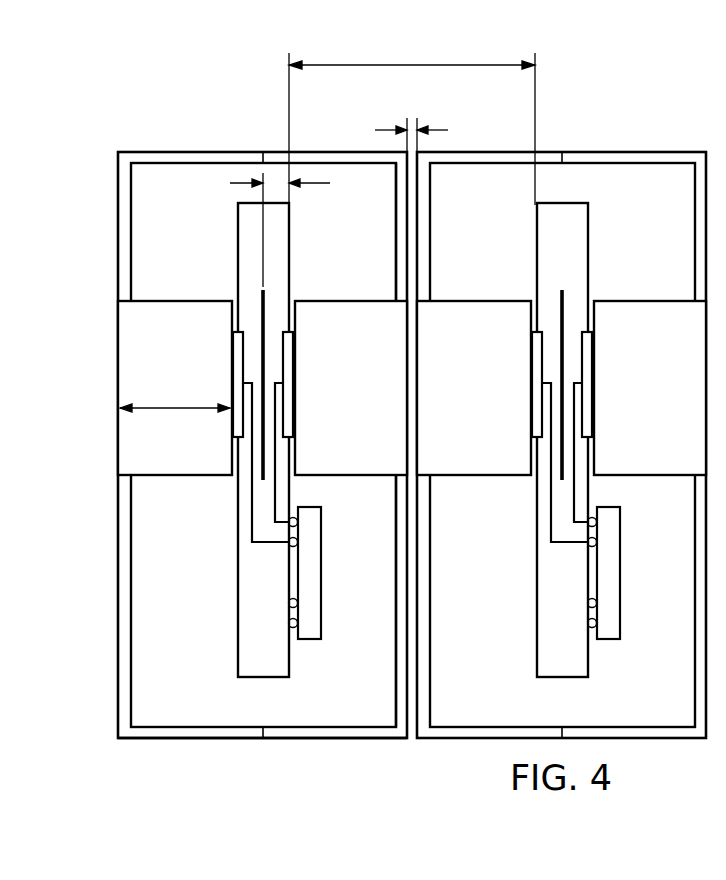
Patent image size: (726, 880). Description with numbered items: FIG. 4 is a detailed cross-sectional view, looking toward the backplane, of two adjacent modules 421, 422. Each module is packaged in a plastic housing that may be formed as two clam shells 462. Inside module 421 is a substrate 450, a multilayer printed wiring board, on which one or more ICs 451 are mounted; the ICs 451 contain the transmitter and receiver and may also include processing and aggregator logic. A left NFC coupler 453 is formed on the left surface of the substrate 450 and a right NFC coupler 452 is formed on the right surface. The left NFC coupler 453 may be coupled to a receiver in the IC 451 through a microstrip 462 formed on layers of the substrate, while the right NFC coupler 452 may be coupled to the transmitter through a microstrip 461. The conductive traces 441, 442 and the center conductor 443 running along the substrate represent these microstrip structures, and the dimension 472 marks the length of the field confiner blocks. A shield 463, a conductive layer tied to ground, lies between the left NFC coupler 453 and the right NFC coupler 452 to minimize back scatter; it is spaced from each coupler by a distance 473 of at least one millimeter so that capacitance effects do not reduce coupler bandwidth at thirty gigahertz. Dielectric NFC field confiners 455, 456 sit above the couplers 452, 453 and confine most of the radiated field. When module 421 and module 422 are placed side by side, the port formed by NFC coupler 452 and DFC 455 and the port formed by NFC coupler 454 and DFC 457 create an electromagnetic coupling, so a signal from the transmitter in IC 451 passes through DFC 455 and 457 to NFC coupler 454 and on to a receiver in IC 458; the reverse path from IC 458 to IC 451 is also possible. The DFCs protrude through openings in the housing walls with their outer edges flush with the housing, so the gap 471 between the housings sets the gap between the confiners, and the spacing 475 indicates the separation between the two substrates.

The module 421 is at (180, 147).
The module 422 is at (658, 147).
The inner conductive trace 441 is at (272, 492).
The outer conductive trace 442 is at (253, 525).
The center conductor 443 is at (258, 297).
The substrate 450 is at (245, 238).
The IC 451 is at (313, 575).
The right NFC coupler 452 is at (295, 420).
The left NFC coupler 453 is at (235, 418).
The NFC coupler 454 is at (535, 418).
The NFC field confiner 455 is at (372, 477).
The NFC field confiner 456 is at (124, 338).
The DFC 457 is at (481, 469).
The IC 458 is at (610, 573).
The microstrip 461 is at (397, 272).
The clam shell 462 is at (207, 740).
The shield 463 is at (117, 236).
The gap 471 is at (435, 129).
The ferrite core length L 472 is at (158, 412).
The distance 473 is at (316, 184).
The center spacing 475 is at (410, 63).